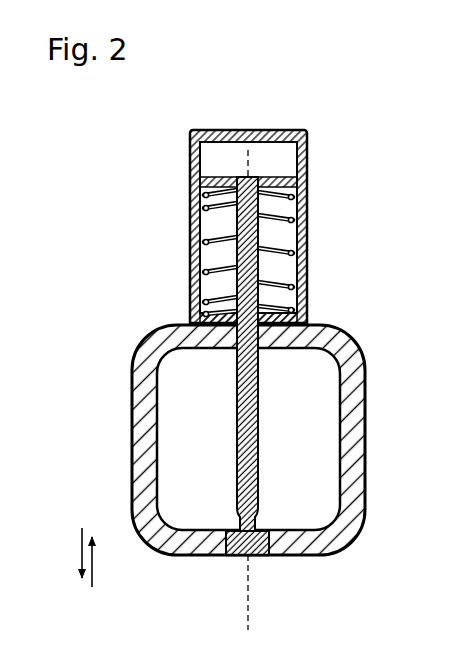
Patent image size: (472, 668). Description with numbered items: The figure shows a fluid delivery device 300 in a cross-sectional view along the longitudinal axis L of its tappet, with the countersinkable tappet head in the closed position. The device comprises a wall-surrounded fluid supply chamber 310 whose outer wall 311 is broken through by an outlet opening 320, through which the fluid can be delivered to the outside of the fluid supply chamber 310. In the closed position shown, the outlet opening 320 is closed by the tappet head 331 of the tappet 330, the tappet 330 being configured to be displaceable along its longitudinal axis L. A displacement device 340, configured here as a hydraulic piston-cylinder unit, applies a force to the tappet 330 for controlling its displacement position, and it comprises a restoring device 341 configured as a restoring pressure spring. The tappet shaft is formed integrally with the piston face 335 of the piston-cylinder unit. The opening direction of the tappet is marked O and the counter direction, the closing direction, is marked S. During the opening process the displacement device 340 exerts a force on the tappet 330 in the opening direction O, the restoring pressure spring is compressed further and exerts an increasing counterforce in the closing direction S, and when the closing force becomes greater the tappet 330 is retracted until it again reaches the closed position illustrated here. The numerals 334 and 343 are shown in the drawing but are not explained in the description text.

The fluid delivery device 300 is at (247, 119).
The fluid supply chamber 310 is at (323, 463).
The outer wall 311 is at (145, 372).
The tappet 330 is at (206, 441).
The rod 334 is at (262, 417).
The outlet opening 320 is at (233, 561).
The tappet head 331 is at (252, 554).
The displacement device 340 is at (320, 226).
The restoring device 341 is at (300, 208).
The spring housing 343 is at (188, 148).
The piston face 335 is at (300, 178).